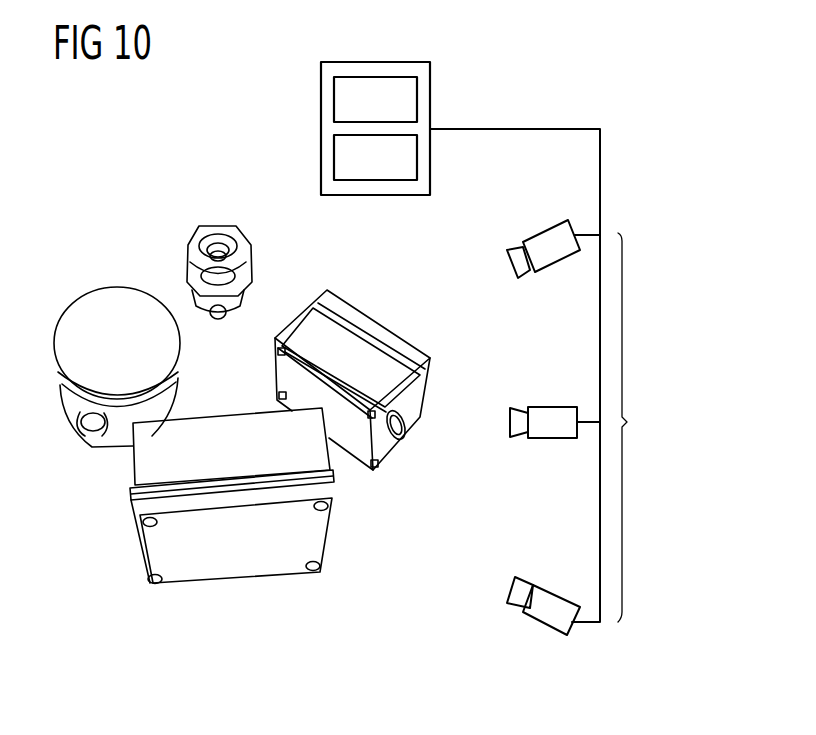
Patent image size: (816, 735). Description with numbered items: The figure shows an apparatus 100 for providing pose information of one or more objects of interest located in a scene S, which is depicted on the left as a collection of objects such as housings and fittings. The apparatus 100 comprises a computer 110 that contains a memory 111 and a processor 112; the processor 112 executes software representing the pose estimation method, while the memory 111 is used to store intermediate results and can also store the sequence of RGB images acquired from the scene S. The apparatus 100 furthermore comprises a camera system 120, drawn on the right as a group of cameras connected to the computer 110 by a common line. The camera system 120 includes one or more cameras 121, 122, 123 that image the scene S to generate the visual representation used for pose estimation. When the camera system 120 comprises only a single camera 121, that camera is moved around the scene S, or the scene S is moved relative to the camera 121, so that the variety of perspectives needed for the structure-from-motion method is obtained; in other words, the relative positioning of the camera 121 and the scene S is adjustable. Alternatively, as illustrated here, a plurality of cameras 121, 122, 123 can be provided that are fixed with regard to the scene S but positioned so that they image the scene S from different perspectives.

The apparatus 100 is at (590, 92).
The computer 110 is at (432, 91).
The memory 111 is at (333, 96).
The processor 112 is at (333, 154).
The camera system 120 is at (644, 427).
The camera 121 is at (545, 228).
The camera 122 is at (548, 405).
The camera 123 is at (560, 594).
The scene S is at (145, 225).